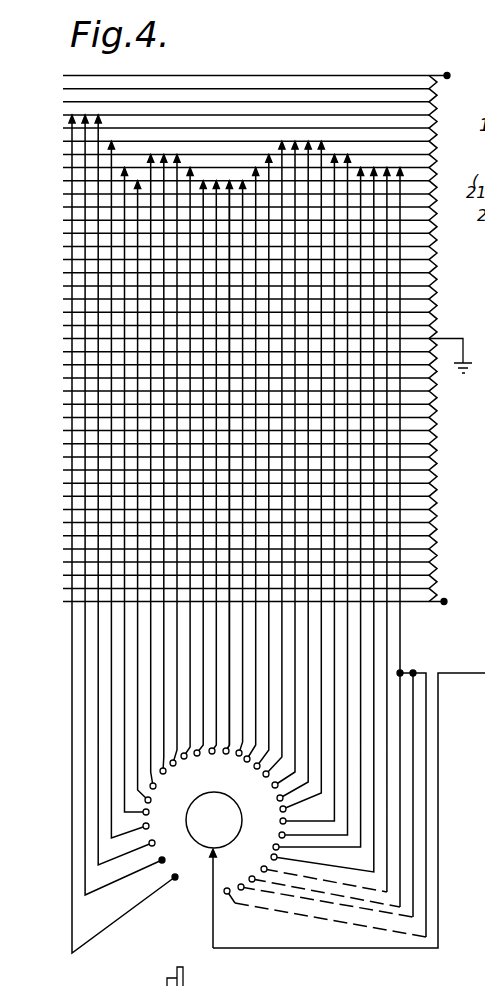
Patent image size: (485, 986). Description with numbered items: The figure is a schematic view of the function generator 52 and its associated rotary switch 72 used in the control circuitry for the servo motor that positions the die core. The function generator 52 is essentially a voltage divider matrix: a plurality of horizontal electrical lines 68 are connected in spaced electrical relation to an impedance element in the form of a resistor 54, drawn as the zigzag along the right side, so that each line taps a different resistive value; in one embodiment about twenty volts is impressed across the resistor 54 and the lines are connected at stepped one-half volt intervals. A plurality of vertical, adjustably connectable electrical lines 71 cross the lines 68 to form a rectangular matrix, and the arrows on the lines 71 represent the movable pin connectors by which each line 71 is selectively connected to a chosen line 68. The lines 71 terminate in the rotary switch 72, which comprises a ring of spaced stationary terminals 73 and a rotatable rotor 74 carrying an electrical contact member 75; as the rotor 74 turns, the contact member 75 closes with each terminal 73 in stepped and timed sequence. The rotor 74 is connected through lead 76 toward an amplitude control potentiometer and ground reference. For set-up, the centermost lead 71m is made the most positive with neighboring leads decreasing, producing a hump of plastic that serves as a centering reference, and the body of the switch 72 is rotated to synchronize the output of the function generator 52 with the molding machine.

The function generator 52 is at (156, 72).
The electrical lines 68 is at (340, 99).
The adjustably connectable electrical lines 71 is at (70, 263).
The centermost lead 71m is at (230, 192).
The resistor 54 is at (436, 302).
The rotary switch 72 is at (250, 862).
The stationary terminals 73 is at (157, 819).
The rotor 74 is at (231, 797).
The electrical contact member 75 is at (197, 847).
The lead 76 is at (268, 949).